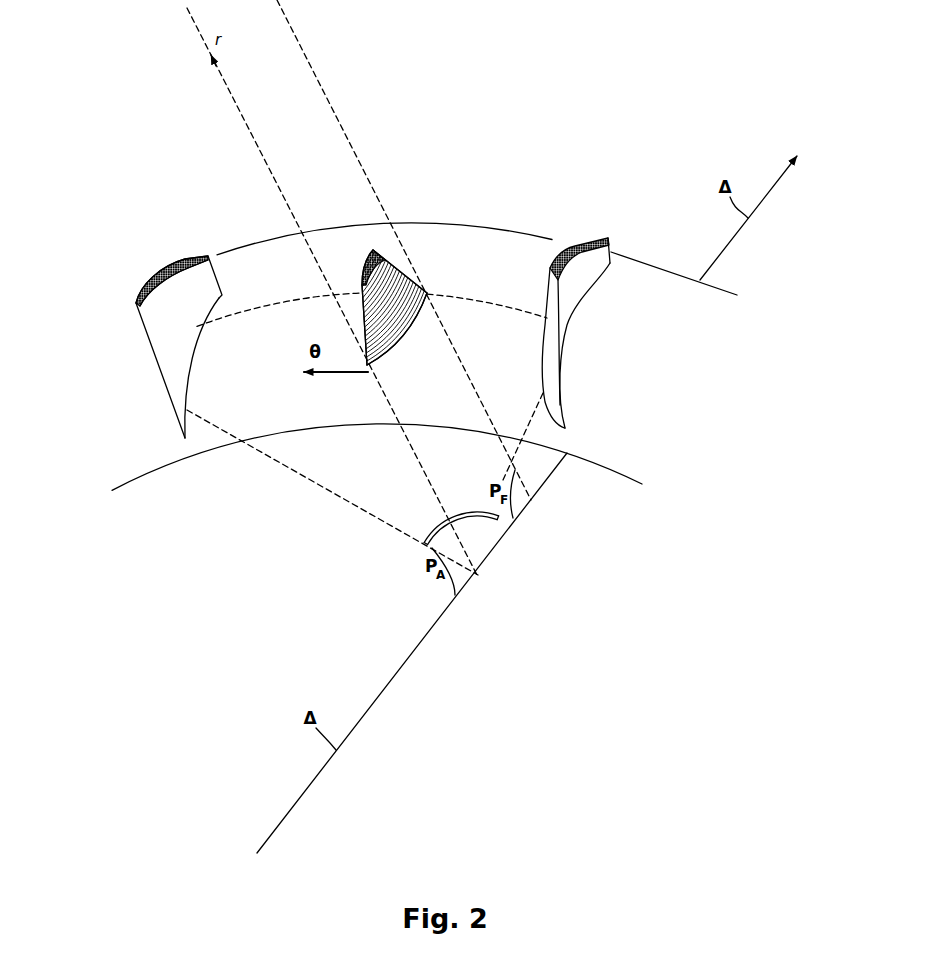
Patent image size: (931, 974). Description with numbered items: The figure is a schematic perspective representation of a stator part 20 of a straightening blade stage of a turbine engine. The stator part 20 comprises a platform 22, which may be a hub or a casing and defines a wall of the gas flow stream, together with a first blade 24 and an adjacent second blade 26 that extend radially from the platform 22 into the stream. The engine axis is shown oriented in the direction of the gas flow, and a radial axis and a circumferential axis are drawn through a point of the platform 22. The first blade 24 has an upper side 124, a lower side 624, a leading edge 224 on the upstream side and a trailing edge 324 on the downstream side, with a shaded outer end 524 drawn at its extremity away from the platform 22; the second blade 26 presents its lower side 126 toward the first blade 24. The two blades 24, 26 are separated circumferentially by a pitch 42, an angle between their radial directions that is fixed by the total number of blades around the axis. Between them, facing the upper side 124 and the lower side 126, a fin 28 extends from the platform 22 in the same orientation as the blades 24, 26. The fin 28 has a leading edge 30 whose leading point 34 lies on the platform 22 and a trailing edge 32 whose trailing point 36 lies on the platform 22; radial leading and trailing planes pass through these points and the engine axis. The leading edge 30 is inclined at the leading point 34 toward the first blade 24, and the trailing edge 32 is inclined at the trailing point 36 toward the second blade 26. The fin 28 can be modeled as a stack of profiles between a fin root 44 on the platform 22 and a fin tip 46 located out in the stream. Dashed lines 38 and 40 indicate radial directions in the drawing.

The stator part 20 is at (82, 245).
The platform 22 is at (666, 317).
The first blade 24 is at (576, 298).
The second blade 26 is at (176, 320).
The fin 28 is at (363, 301).
The leading edge 30 is at (363, 301).
The trailing edge 32 is at (397, 262).
The leading point 34 is at (369, 373).
The trailing point 36 is at (431, 292).
The radial line 38 is at (233, 97).
The radial line 40 is at (310, 60).
The pitch 42 is at (461, 519).
The fin root 44 is at (410, 328).
The fin tip 46 is at (359, 268).
The upper side 124 is at (538, 288).
The lower side 126 is at (172, 340).
The leading edge 224 is at (567, 380).
The trailing edge 324 is at (613, 243).
The outer end 524 is at (562, 246).
The lower side 624 is at (577, 313).